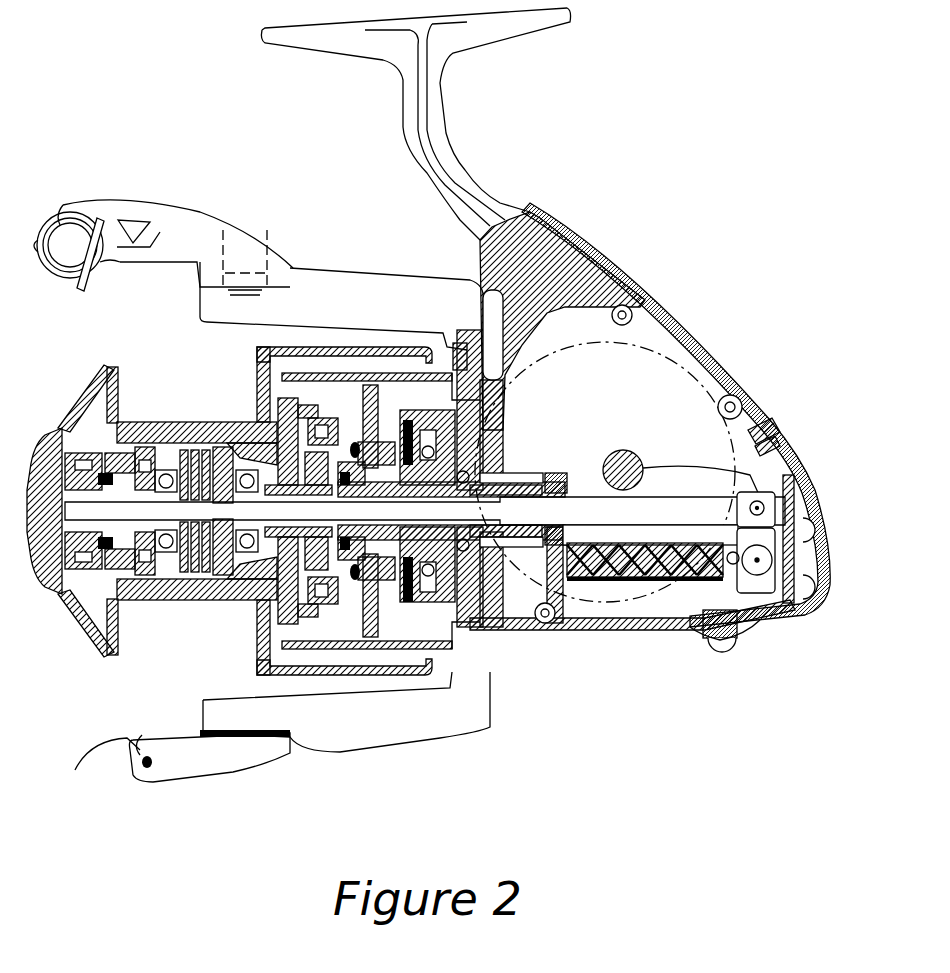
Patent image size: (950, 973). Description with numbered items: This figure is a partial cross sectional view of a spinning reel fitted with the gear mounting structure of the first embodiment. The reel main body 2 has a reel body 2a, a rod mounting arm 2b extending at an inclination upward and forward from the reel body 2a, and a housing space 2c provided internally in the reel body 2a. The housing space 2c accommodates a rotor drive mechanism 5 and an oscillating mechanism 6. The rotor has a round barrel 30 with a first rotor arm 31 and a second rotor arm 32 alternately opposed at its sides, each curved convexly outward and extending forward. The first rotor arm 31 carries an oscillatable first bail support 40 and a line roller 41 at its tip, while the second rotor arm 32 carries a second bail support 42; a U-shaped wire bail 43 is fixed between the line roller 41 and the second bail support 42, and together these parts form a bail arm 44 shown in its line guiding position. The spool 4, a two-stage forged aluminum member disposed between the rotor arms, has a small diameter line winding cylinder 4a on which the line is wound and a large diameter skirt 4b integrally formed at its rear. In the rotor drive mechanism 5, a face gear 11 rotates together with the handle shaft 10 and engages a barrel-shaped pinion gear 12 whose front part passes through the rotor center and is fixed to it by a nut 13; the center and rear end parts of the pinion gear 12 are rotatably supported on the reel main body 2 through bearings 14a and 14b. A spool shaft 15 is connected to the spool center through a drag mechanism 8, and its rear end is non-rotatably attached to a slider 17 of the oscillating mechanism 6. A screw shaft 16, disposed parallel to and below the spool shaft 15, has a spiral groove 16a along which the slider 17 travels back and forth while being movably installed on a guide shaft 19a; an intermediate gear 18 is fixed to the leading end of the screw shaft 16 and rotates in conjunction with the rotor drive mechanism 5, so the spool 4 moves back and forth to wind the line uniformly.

The reel main body 2 is at (545, 319).
The reel body 2a is at (543, 210).
The rod mounting arm 2b is at (455, 125).
The housing space 2c is at (710, 340).
The spool 4 is at (229, 443).
The line winding cylinder 4a is at (165, 423).
The skirt 4b is at (318, 347).
The rotor drive mechanism 5 is at (483, 320).
The oscillating mechanism 6 is at (735, 613).
The drag mechanism 8 is at (188, 600).
The handle shaft 10 is at (760, 480).
The face gear 11 is at (673, 378).
The pinion gear 12 is at (517, 457).
The nut 13 is at (360, 550).
The bearing 14a is at (500, 527).
The bearing 14b is at (580, 575).
The spool shaft 15 is at (610, 515).
The screw shaft 16 is at (660, 540).
The spiral groove 16a is at (640, 560).
The slider 17 is at (772, 560).
The intermediate gear 18 is at (545, 590).
The guide shaft 19a is at (715, 640).
The barrel 30 is at (345, 498).
The first rotor arm 31 is at (345, 290).
The second rotor arm 32 is at (420, 727).
The first bail support 40 is at (161, 228).
The line roller 41 is at (70, 213).
The second bail support 42 is at (165, 777).
The bail 43 is at (90, 762).
The bail arm 44 is at (74, 265).